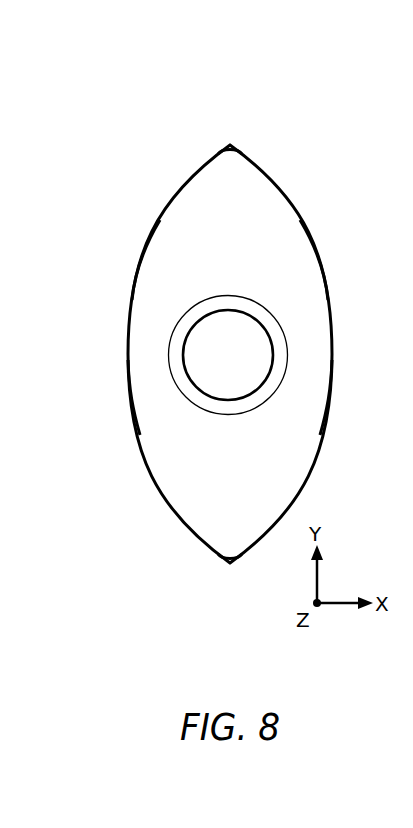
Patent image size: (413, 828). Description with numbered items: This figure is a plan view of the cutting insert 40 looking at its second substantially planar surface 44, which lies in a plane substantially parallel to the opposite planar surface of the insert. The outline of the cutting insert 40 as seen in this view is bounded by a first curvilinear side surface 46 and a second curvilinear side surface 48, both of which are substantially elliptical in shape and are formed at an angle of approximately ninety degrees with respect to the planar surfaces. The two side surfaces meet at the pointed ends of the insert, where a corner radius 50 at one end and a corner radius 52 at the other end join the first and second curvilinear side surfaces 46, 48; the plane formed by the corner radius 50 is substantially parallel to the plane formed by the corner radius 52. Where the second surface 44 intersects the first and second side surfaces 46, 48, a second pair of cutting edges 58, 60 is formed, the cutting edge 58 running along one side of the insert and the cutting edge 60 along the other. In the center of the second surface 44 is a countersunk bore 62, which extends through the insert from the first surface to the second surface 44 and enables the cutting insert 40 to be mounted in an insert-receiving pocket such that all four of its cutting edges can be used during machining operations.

The cutting insert 40 is at (90, 105).
The second substantially planar surface 44 is at (195, 218).
The first curvilinear side surface 46 is at (127, 392).
The second curvilinear side surface 48 is at (332, 392).
The corner radius 50 is at (232, 144).
The corner radius 52 is at (229, 565).
The cutting edge 58 is at (137, 273).
The cutting edge 60 is at (322, 272).
The countersunk bore 62 is at (226, 313).